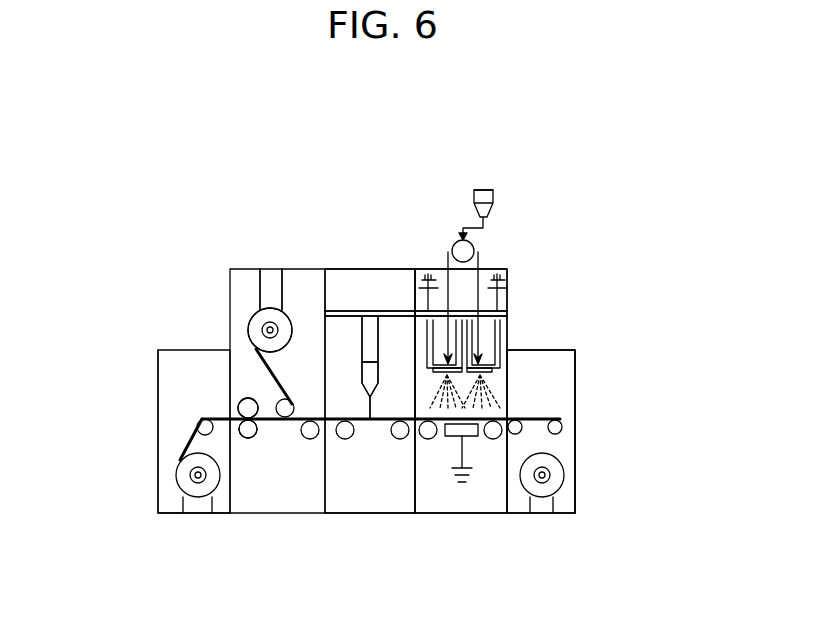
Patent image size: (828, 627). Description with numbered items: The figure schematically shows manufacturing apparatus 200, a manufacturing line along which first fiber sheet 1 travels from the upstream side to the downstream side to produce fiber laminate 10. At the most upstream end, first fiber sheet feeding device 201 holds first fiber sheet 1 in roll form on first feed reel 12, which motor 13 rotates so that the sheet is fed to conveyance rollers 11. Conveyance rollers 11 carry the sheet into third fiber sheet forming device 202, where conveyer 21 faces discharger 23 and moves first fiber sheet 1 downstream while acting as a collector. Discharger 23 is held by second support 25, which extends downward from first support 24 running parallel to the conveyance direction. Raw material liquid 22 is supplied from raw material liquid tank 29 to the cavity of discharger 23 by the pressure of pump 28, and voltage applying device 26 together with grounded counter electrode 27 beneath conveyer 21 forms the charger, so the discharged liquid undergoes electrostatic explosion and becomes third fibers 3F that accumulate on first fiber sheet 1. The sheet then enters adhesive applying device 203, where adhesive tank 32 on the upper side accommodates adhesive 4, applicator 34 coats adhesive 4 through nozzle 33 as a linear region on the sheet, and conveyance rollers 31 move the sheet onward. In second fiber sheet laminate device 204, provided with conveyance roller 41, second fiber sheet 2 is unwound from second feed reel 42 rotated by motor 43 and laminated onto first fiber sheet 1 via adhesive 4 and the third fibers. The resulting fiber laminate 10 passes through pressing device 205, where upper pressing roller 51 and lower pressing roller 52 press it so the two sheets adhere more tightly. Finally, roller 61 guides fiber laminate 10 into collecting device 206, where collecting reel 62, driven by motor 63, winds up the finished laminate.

The manufacturing apparatus 200 is at (249, 240).
The second fiber sheet laminate device 204 is at (135, 200).
The motor 43 is at (263, 293).
The second feed reel 42 is at (258, 322).
The pressing device 205 is at (165, 275).
The pressing roller 51 is at (250, 398).
The pressing roller 52 is at (247, 420).
The second fiber sheet 2 is at (279, 380).
The fiber laminate 10 is at (187, 433).
The roller 61 is at (203, 420).
The collecting reel 62 is at (177, 468).
The motor 63 is at (190, 505).
The conveyance roller 41 is at (307, 438).
The conveyance rollers 31 is at (398, 438).
The applicator 34 is at (405, 243).
The adhesive tank 32 is at (366, 330).
The nozzle 33 is at (372, 373).
The adhesive 4 is at (369, 405).
The raw material liquid tank 29 is at (485, 190).
The raw material liquid 22 is at (494, 210).
The pump 28 is at (475, 247).
The voltage applying device 26 is at (500, 290).
The first support 24 is at (503, 313).
The second support 25 is at (497, 337).
The discharger 23 is at (495, 370).
The third fibers 3F is at (490, 390).
The conveyer 21 is at (444, 437).
The counter electrode 27 is at (470, 440).
The conveyance rollers 11 is at (558, 425).
The first fiber sheet 1 is at (567, 458).
The first feed reel 12 is at (552, 477).
The motor 13 is at (543, 505).
The collecting device 206 is at (230, 532).
The adhesive applying device 203 is at (414, 543).
The third fiber sheet forming device 202 is at (500, 543).
The first fiber sheet feeding device 201 is at (575, 530).